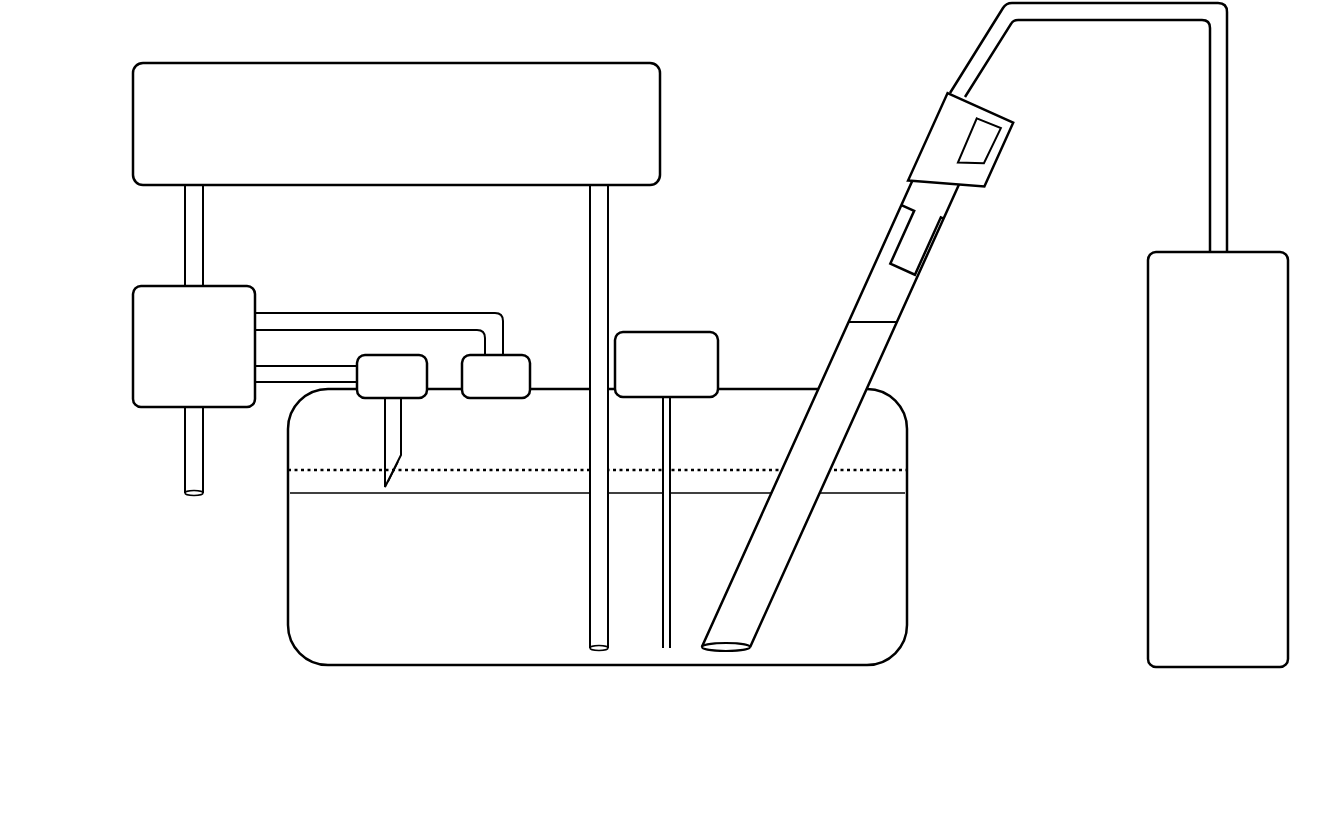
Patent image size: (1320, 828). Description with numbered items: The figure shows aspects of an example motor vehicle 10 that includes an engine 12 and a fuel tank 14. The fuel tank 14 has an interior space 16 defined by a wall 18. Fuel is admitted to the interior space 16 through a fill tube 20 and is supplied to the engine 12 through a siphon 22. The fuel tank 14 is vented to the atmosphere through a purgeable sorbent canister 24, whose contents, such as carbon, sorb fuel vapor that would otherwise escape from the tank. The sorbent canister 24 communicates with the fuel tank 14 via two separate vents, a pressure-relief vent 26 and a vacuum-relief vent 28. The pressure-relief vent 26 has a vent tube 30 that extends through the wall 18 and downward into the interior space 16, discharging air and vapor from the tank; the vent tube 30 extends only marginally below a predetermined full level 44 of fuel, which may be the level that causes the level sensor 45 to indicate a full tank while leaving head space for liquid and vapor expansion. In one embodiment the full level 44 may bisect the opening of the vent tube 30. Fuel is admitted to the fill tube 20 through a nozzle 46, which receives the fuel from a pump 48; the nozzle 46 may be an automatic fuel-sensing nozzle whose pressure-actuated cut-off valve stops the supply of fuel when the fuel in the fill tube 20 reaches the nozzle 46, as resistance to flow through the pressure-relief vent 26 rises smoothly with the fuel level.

The motor vehicle 10 is at (823, 92).
The engine 12 is at (396, 124).
The fuel tank 14 is at (610, 546).
The interior space 16 is at (597, 456).
The wall 18 is at (908, 603).
The fill tube 20 is at (855, 384).
The siphon 22 is at (590, 627).
The purgeable sorbent canister 24 is at (194, 356).
The pressure-relief vent 26 is at (408, 412).
The vacuum-relief vent 28 is at (532, 360).
The vent tube 30 is at (384, 426).
The predetermined full level 44 is at (887, 467).
The level sensor 45 is at (668, 332).
The nozzle 46 is at (891, 266).
The pump 48 is at (1119, 335).